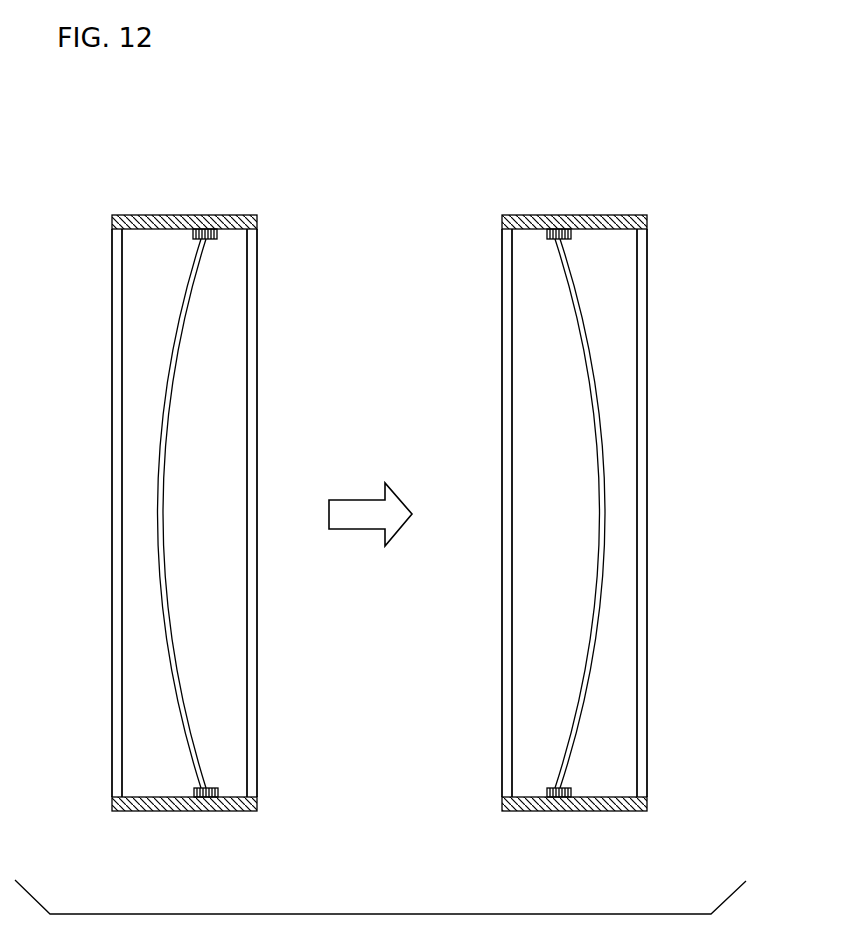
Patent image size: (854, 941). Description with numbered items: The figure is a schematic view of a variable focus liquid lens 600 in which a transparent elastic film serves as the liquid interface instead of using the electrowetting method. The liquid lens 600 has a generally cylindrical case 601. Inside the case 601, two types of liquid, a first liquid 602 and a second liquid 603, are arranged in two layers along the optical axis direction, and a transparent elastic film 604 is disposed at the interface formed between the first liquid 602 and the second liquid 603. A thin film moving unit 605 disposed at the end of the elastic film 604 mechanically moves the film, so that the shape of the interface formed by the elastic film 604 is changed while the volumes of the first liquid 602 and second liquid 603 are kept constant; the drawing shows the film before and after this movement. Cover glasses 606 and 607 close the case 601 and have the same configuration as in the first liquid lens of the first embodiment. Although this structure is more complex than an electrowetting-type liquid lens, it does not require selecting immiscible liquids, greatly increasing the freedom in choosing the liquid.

The liquid lens 600 is at (265, 134).
The case 601 is at (132, 207).
The first liquid 602 is at (130, 678).
The second liquid 603 is at (218, 682).
The transparent elastic film 604 is at (158, 528).
The thin film moving unit 605 is at (194, 793).
The cover glass 606 is at (112, 359).
The cover glass 607 is at (258, 376).